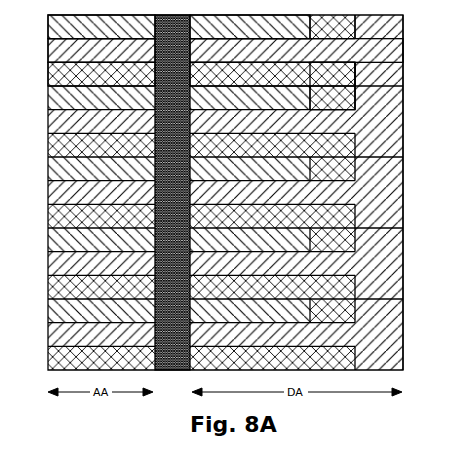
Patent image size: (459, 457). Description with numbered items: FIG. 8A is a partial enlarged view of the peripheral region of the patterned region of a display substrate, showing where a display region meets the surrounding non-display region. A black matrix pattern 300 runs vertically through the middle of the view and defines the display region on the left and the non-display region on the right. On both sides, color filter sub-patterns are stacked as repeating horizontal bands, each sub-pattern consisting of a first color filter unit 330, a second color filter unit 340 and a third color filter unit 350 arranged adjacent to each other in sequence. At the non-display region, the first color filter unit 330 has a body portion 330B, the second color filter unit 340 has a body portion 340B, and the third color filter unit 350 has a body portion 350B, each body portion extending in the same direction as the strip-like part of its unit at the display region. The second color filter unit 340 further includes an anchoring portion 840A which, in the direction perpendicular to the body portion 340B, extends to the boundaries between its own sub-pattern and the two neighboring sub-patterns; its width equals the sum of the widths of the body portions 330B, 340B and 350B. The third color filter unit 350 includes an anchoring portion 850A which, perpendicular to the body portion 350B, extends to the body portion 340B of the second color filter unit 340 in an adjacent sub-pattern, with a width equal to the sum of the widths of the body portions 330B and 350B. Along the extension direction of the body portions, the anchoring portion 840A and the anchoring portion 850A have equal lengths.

The first color filter unit 330 is at (86, 27).
The second color filter unit 340 is at (86, 51).
The third color filter unit 350 is at (86, 74).
The body portion 330B is at (250, 27).
The body portion 340B is at (296, 51).
The body portion 350B is at (272, 74).
The anchoring portion 840A is at (379, 192).
The anchoring portion 850A is at (332, 85).
The black matrix pattern 300 is at (172, 192).